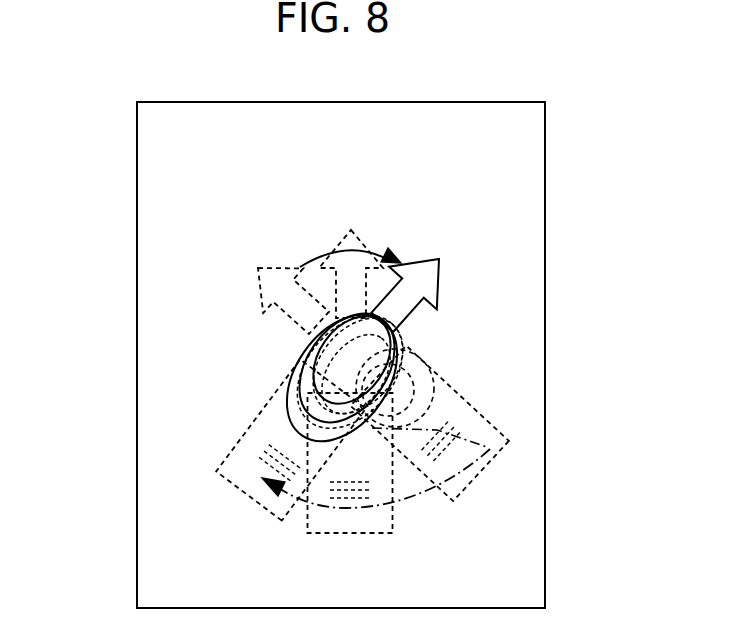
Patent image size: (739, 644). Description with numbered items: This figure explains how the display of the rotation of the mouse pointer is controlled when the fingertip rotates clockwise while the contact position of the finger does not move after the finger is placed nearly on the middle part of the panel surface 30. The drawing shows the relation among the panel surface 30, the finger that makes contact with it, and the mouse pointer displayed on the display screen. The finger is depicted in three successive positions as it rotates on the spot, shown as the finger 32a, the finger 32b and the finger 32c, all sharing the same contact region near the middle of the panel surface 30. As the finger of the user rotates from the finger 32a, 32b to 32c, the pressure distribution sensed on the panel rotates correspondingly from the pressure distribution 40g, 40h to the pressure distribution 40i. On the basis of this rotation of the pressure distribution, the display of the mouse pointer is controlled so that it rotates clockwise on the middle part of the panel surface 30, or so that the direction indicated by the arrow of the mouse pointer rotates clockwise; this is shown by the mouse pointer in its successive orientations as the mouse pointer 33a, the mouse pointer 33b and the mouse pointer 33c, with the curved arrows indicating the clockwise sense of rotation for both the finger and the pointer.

The panel surface 30 is at (468, 101).
The mouse pointer 33a is at (258, 268).
The mouse pointer 33b is at (351, 230).
The mouse pointer 33c is at (439, 259).
The pressure distribution 40i is at (287, 408).
The pressure distribution 40g is at (390, 403).
The pressure distribution 40h is at (490, 449).
The finger 32a is at (463, 503).
The finger 32b is at (350, 533).
The finger 32c is at (247, 497).